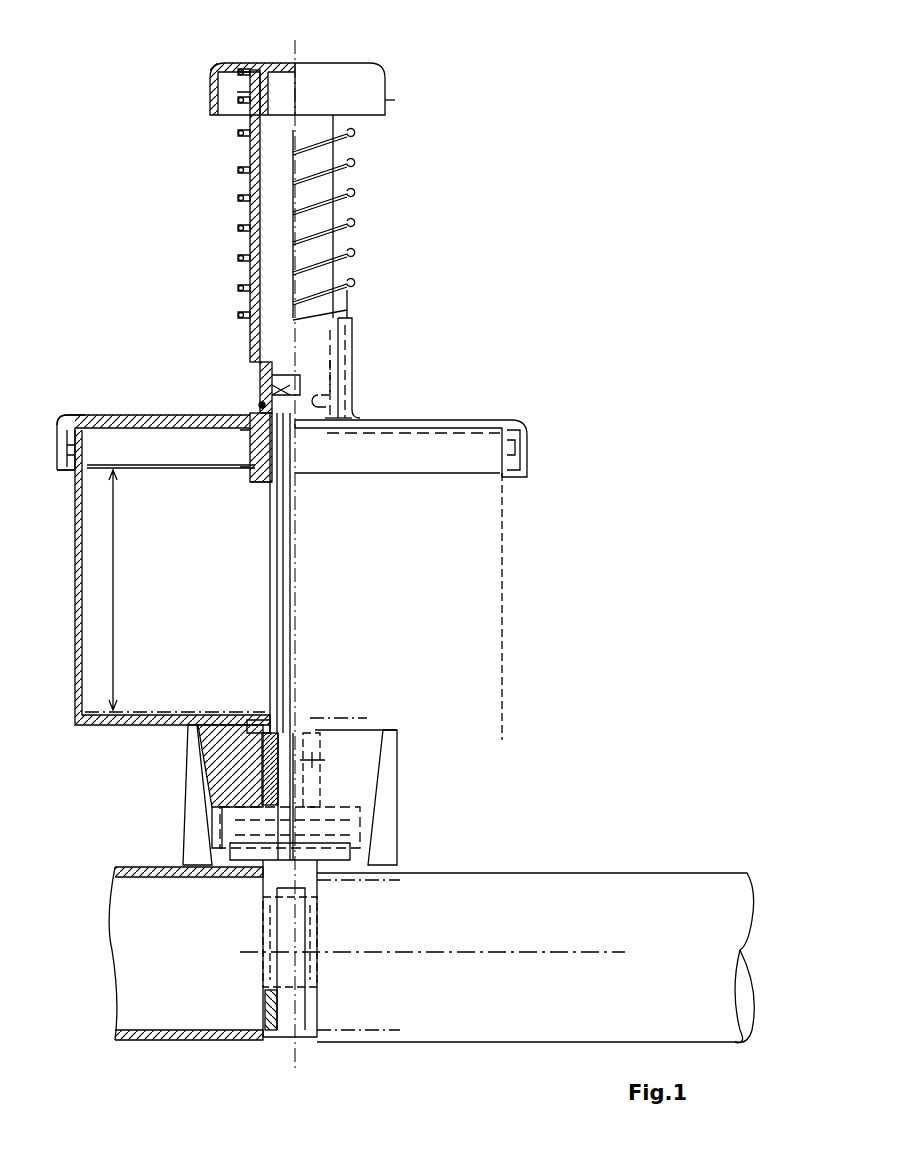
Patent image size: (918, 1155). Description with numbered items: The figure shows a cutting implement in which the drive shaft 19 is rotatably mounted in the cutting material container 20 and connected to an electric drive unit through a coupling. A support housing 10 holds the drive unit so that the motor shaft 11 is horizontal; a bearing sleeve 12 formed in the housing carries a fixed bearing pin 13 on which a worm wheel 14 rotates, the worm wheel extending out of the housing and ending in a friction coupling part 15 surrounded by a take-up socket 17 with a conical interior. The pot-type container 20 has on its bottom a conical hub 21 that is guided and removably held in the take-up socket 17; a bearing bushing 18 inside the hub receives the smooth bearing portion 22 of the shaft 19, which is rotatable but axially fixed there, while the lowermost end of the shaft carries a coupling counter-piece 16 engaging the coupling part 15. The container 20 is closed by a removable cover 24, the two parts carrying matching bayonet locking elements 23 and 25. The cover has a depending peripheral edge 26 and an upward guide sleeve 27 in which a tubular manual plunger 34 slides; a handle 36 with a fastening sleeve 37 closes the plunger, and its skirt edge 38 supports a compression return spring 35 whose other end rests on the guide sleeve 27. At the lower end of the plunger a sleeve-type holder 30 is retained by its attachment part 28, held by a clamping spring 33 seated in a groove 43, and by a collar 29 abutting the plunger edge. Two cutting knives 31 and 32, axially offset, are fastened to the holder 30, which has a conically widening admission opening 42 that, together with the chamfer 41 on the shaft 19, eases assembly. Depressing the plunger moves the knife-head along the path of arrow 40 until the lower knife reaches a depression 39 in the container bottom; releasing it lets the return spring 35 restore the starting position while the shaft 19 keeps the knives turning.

The support housing 10 is at (180, 1040).
The motor shaft 11 is at (466, 950).
The bearing sleeve 12 is at (265, 998).
The bearing pin 13 is at (285, 1030).
The worm wheel 14 is at (263, 918).
The friction coupling part 15 is at (230, 849).
The coupling counter-piece 16 is at (232, 817).
The take-up socket 17 is at (397, 768).
The bearing bushing 18 is at (262, 776).
The drive shaft 19 is at (270, 596).
The cutting material container 20 is at (75, 573).
The hub 21 is at (215, 758).
The smooth bearing portion 22 is at (320, 758).
The bayonet locking element 23 is at (65, 415).
The cover 24 is at (495, 420).
The bayonet locking element 25 is at (68, 441).
The peripheral edge 26 is at (60, 466).
The guide sleeve 27 is at (352, 333).
The attachment part 28 is at (262, 368).
The collar 29 is at (352, 414).
The holder 30 is at (255, 460).
The cutting knife 31 is at (147, 463).
The cutting knife 32 is at (442, 427).
The clamping spring 33 is at (258, 403).
The tubular manual plunger 34 is at (350, 208).
The compression return spring 35 is at (240, 198).
The handle 36 is at (290, 63).
The fastening sleeve 37 is at (250, 90).
The skirt edge 38 is at (395, 98).
The depression 39 is at (262, 720).
The arrow 40 is at (113, 598).
The chamfer 41 is at (265, 383).
The admission opening 42 is at (268, 483).
The groove 43 is at (325, 393).